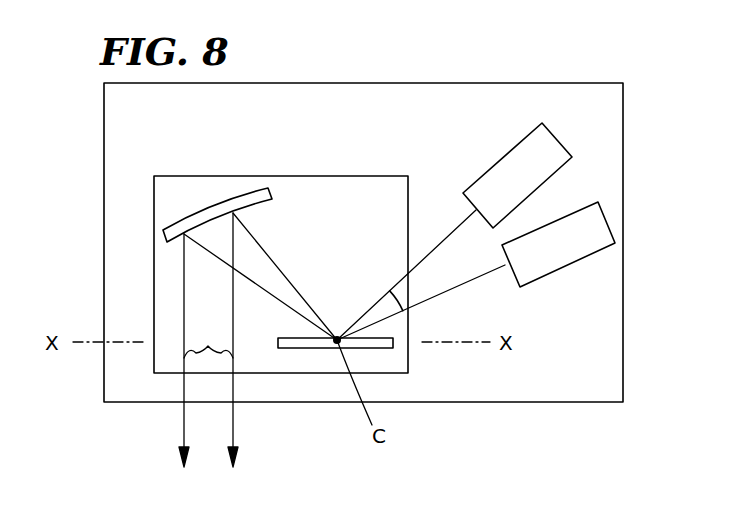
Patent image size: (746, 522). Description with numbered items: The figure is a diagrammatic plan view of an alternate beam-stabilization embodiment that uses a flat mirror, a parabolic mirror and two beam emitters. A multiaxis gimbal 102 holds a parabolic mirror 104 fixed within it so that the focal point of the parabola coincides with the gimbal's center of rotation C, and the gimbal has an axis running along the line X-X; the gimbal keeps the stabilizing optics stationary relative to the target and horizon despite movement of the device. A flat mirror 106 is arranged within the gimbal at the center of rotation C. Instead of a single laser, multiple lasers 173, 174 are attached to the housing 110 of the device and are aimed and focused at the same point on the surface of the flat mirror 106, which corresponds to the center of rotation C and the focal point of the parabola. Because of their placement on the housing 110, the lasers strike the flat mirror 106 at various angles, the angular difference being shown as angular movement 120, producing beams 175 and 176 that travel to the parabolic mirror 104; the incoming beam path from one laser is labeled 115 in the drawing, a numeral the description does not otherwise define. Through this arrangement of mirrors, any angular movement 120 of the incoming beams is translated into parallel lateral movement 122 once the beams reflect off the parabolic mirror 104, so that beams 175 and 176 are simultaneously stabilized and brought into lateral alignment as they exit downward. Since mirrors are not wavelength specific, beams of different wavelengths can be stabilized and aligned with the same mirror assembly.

The housing 110 is at (405, 83).
The multiaxis gimbal 102 is at (168, 176).
The parabolic mirror 104 is at (263, 201).
The flat mirror 106 is at (393, 346).
The beam to detector 173 115 is at (391, 292).
The angular movement 120 is at (409, 294).
The parallel lateral movement 122 is at (208, 340).
The laser 173 is at (487, 167).
The laser 174 is at (553, 272).
The beam 175 is at (233, 425).
The beam 176 is at (472, 281).